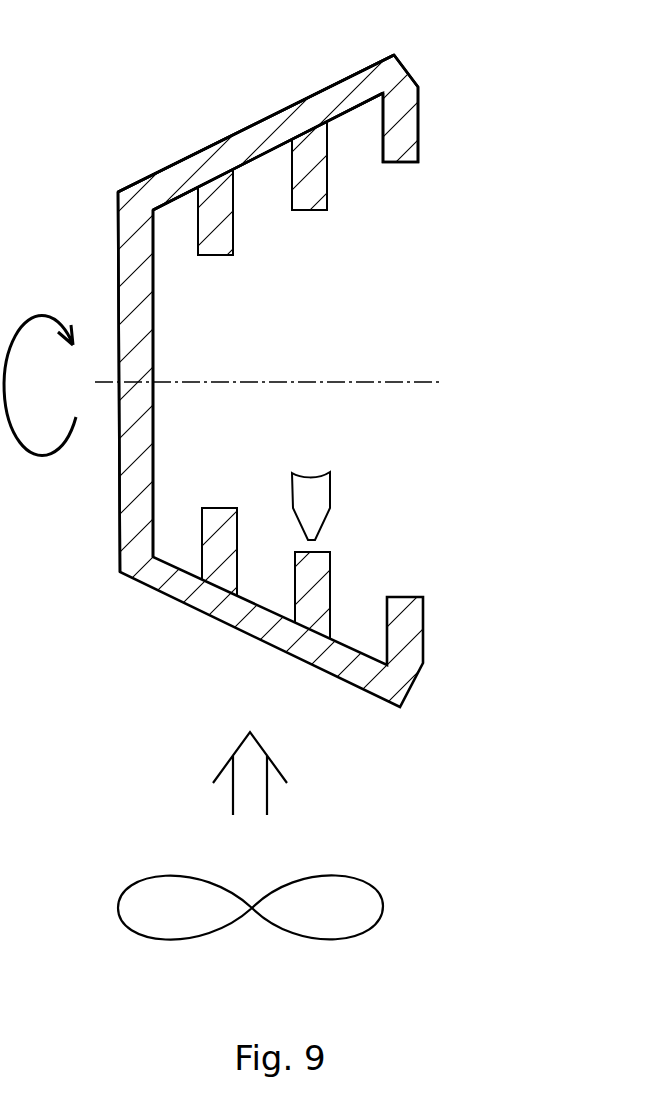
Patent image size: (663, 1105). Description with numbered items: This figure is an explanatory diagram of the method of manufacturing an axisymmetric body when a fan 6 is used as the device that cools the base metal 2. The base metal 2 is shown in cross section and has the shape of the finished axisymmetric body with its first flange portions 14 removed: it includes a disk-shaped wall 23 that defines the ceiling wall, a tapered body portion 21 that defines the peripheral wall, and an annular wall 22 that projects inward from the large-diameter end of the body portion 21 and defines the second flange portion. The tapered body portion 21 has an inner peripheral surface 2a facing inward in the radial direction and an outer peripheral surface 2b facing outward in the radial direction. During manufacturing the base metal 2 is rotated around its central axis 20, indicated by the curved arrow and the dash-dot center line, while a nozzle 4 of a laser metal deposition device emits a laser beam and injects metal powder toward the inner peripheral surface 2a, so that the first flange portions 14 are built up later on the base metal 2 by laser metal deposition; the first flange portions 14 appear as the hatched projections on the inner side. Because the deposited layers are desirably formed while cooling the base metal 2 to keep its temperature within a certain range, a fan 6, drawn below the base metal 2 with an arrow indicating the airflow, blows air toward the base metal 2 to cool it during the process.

The base metal 2 is at (255, 102).
The tapered body portion 21 is at (285, 122).
The outer peripheral surface 2b is at (223, 139).
The inner peripheral surface 2a is at (337, 117).
The annular wall 22 is at (397, 163).
The disk-shaped wall 23 is at (133, 285).
The first flange portions 14 is at (217, 255).
The central axis 20 is at (417, 378).
The nozzle 4 is at (312, 500).
The fan 6 is at (207, 937).